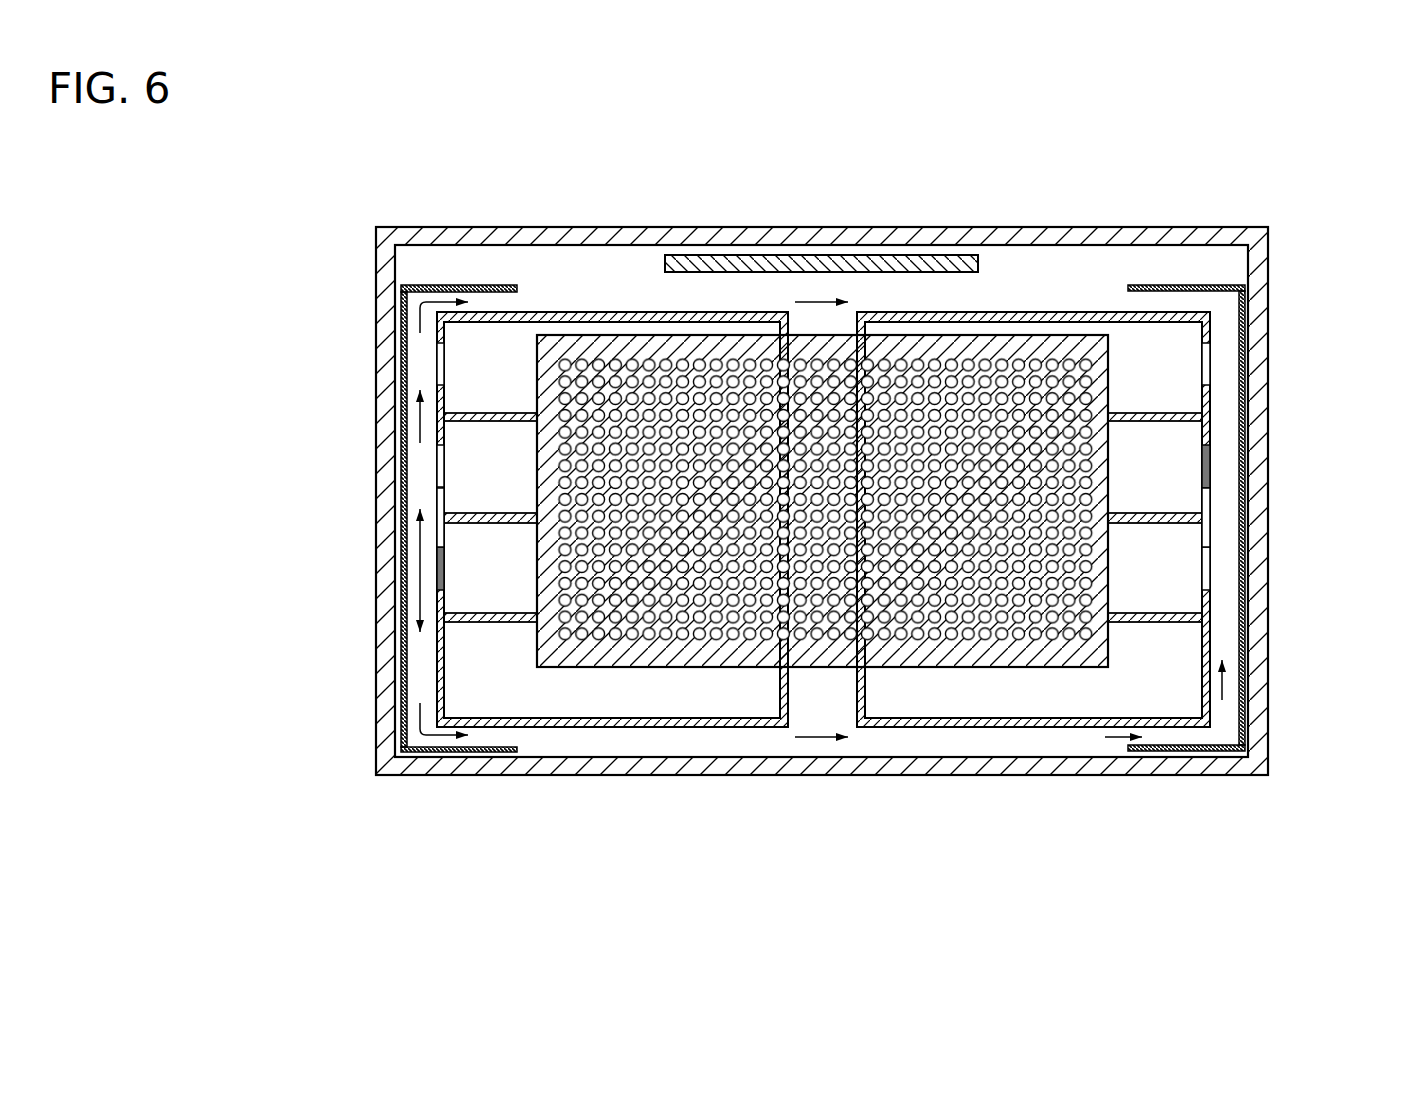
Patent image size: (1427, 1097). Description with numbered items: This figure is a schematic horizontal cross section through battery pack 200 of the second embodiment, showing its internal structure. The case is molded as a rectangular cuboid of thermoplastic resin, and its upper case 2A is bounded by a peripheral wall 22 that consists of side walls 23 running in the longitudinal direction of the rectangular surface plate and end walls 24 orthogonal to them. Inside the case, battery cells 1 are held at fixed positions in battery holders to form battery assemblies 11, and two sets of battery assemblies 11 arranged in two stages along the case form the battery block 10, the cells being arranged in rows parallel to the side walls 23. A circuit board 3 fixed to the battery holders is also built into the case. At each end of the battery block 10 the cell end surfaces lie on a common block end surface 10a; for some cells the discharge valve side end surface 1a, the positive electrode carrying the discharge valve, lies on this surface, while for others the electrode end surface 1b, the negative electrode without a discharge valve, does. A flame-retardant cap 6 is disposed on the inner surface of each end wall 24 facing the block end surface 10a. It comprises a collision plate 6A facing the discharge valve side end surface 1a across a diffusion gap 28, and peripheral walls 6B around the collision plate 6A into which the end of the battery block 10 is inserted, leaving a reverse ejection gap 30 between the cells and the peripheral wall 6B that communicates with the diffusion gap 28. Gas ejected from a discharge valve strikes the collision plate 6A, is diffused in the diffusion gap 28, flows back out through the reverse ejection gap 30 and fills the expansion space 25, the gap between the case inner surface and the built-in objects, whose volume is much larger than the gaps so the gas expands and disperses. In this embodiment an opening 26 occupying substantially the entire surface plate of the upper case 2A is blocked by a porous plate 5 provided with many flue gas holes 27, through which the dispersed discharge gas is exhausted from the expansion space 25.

The battery pack 200 is at (1254, 135).
The upper case 2A is at (1244, 205).
The peripheral wall 22 is at (1323, 905).
The side wall 23 is at (735, 765).
The end wall 24 is at (381, 632).
The flame-retardant cap 6 is at (1246, 357).
The collision plate 6A is at (402, 372).
The peripheral wall 6B is at (470, 285).
The circuit board 3 is at (800, 264).
The battery block 10 is at (1010, 138).
The battery assembly 11 is at (626, 305).
The battery cell 1 is at (1180, 431).
The discharge valve side end surface 1a is at (439, 580).
The electrode end surface 1b is at (440, 462).
The block end surface 10a is at (439, 497).
The porous plate 5 is at (890, 653).
The opening 26 is at (588, 333).
The flue gas hole 27 is at (958, 642).
The reverse ejection gap 30 is at (502, 735).
The expansion space 25 is at (722, 738).
The diffusion gap 28 is at (427, 655).